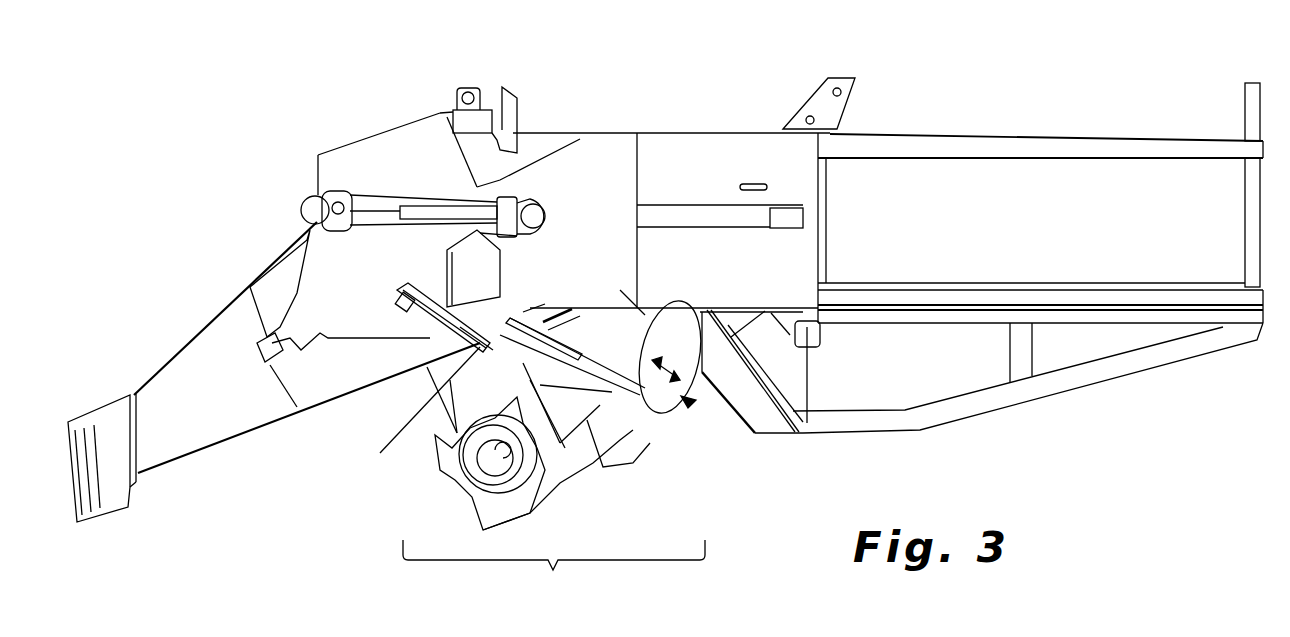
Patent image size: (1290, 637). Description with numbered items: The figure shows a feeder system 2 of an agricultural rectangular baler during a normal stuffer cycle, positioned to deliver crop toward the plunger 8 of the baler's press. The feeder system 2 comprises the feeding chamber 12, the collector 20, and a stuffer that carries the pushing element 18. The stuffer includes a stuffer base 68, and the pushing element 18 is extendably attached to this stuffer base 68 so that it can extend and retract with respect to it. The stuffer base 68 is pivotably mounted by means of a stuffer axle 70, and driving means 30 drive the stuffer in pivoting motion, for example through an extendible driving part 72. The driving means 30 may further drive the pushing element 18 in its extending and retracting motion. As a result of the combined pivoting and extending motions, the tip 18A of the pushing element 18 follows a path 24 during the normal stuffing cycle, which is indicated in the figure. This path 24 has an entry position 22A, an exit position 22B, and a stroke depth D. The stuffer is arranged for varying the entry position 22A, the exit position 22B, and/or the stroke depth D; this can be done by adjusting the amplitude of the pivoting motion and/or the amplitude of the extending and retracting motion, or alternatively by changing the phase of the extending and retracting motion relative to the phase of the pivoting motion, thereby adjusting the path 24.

The feeder system 2 is at (554, 571).
The plunger 8 is at (590, 160).
The feeding chamber 12 is at (652, 423).
The pushing element 18 is at (647, 385).
The tip 18A is at (688, 408).
The collector 20 is at (470, 480).
The entry position 22A is at (605, 391).
The exit position 22B is at (645, 315).
The path 24 is at (695, 388).
The driving means 30 is at (392, 277).
The stuffer base 68 is at (558, 323).
The stuffer axle 70 is at (490, 343).
The extendible driving part 72 is at (430, 330).
The stroke depth D is at (666, 364).